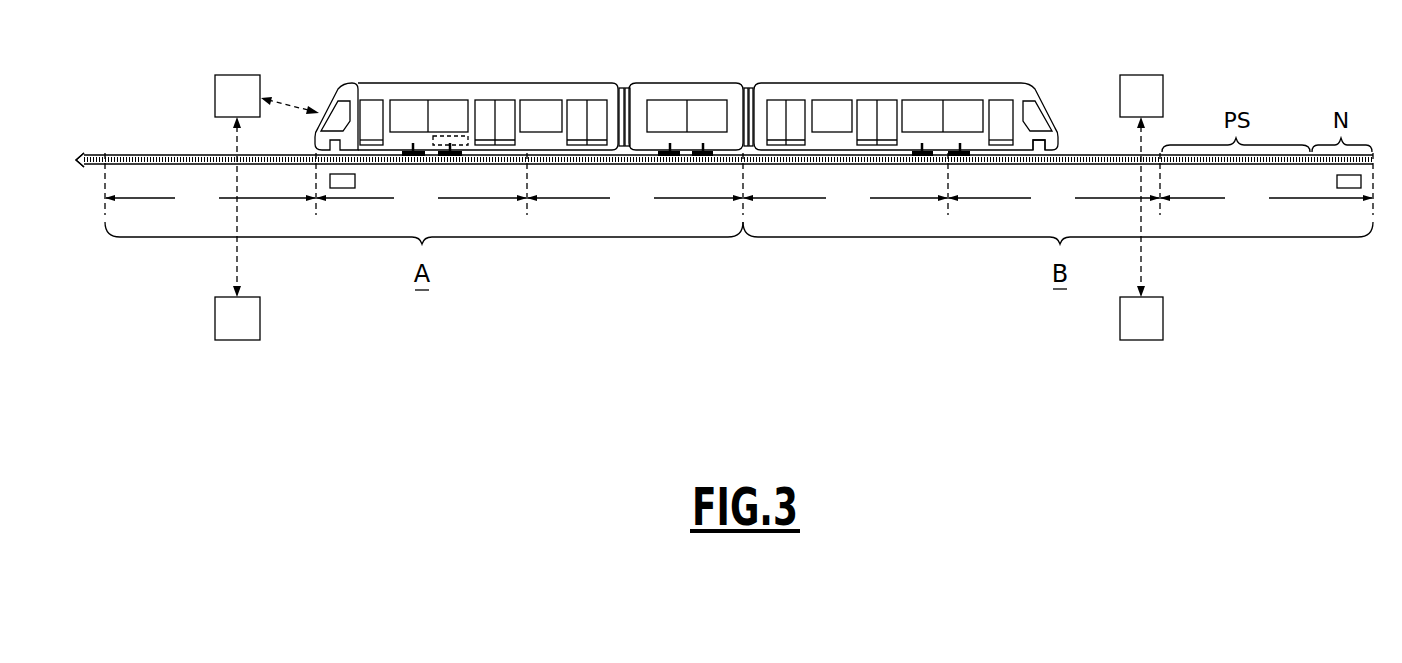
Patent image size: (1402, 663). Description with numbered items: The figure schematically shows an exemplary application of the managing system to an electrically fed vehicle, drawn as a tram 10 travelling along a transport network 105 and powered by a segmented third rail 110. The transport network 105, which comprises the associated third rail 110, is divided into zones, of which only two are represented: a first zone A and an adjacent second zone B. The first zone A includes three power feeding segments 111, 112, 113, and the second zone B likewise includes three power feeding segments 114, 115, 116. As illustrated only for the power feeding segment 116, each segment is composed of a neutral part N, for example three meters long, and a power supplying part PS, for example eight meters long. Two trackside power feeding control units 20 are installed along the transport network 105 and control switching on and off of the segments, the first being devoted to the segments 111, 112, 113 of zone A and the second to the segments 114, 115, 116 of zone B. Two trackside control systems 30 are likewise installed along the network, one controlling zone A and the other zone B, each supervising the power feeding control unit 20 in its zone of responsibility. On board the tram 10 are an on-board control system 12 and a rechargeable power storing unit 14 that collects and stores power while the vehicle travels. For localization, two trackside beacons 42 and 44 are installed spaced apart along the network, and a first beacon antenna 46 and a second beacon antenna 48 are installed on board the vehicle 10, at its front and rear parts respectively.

The tram 10 is at (694, 81).
The on-board control system 12 is at (338, 106).
The rechargeable power storing unit 14 is at (455, 136).
The trackside power feeding control unit 20 is at (689, 318).
The trackside control system 30 is at (689, 96).
The trackside beacon 42 is at (347, 198).
The trackside beacon 44 is at (1346, 200).
The first beacon antenna 46 is at (297, 98).
The second beacon antenna 48 is at (1040, 139).
The transport network 105 is at (78, 152).
The segmented third rail 110 is at (105, 170).
The power feeding segment 111 is at (210, 199).
The power feeding segment 112 is at (421, 199).
The power feeding segment 113 is at (635, 199).
The power feeding segment 114 is at (845, 199).
The power feeding segment 115 is at (1054, 199).
The power feeding segment 116 is at (1266, 199).